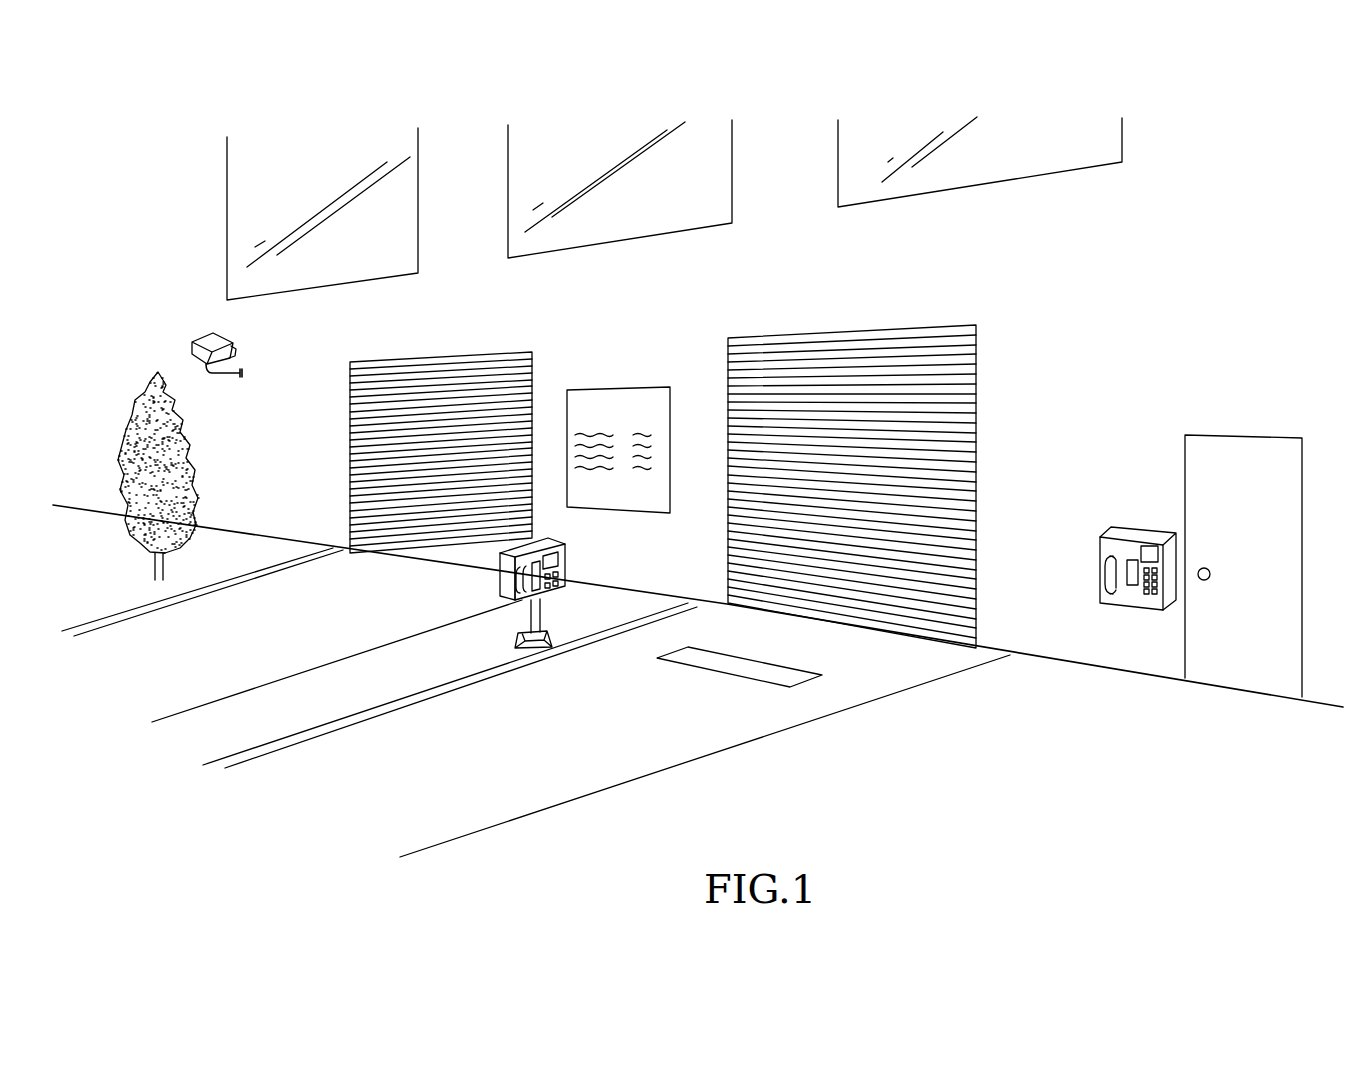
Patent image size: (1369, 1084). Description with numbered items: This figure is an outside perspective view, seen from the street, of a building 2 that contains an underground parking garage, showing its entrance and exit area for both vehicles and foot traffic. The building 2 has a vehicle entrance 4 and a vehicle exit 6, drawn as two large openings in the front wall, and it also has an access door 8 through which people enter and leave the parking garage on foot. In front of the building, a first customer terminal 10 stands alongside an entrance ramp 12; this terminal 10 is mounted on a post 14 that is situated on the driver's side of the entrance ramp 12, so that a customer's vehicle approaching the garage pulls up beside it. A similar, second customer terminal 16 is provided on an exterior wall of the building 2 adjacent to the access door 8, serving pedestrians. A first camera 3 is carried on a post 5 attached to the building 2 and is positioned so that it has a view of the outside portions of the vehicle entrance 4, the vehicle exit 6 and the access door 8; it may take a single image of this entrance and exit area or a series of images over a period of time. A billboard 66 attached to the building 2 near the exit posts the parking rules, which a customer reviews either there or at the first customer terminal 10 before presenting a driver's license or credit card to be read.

The building 2 is at (1140, 282).
The first camera 3 is at (216, 336).
The vehicle entrance 4 is at (989, 401).
The post 5 is at (228, 378).
The vehicle exit 6 is at (348, 468).
The access door 8 is at (1287, 570).
The first customer terminal 10 is at (570, 546).
The entrance ramp 12 is at (409, 779).
The post 14 is at (532, 615).
The second customer terminal 16 is at (1098, 568).
The billboard 66 is at (616, 387).